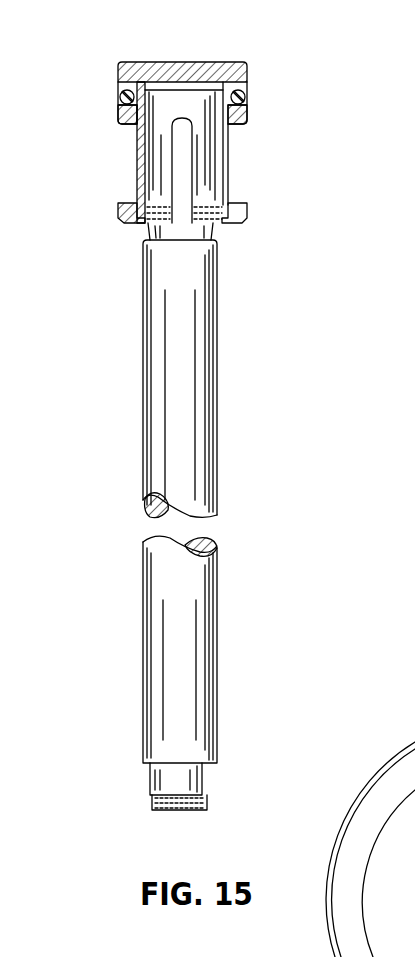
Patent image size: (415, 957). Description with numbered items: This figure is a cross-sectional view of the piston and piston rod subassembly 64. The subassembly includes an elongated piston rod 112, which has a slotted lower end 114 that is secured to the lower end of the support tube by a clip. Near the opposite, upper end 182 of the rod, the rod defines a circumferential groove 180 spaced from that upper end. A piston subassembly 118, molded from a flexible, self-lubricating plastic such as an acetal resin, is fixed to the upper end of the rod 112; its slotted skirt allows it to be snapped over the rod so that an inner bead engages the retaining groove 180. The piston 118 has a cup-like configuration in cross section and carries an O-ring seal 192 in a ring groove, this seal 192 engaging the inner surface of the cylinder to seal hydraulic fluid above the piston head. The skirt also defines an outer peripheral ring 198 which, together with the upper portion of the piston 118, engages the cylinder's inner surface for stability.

The piston subassembly 118 is at (101, 58).
The upper end 182 is at (246, 72).
The O-ring seal 192 is at (247, 103).
The circumferential groove 180 is at (230, 183).
The outer peripheral ring 198 is at (126, 200).
The piston and piston rod subassembly 64 is at (316, 346).
The piston rod 112 is at (220, 623).
The slotted lower end 114 is at (228, 742).